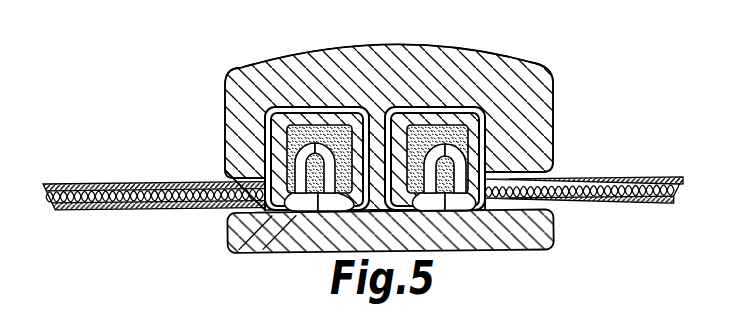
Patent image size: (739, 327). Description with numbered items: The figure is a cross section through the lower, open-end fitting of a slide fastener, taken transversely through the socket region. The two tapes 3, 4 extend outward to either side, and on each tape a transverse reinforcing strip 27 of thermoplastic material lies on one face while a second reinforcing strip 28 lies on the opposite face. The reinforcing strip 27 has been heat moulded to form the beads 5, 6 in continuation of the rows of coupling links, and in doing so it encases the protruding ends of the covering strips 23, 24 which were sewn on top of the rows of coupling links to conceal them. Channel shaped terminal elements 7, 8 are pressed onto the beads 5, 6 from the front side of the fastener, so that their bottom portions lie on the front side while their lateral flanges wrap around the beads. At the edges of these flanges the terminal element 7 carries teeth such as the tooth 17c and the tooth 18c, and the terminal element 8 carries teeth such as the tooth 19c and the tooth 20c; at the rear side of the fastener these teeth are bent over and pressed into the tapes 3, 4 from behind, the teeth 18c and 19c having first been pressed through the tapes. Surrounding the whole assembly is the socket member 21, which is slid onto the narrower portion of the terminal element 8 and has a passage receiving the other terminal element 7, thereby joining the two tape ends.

The tape 3 is at (147, 192).
The tape 4 is at (628, 200).
The bead 5 is at (317, 130).
The bead 6 is at (441, 130).
The terminal element 7 is at (262, 127).
The terminal element 8 is at (487, 148).
The tooth 17c is at (327, 205).
The tooth 18c is at (292, 205).
The tooth 19c is at (465, 205).
The tooth 20c is at (423, 200).
The socket member 21 is at (505, 78).
The covering strip 23 is at (298, 110).
The covering strip 24 is at (463, 112).
The reinforcing strip 27 is at (141, 186).
The reinforcing strip 28 is at (216, 207).